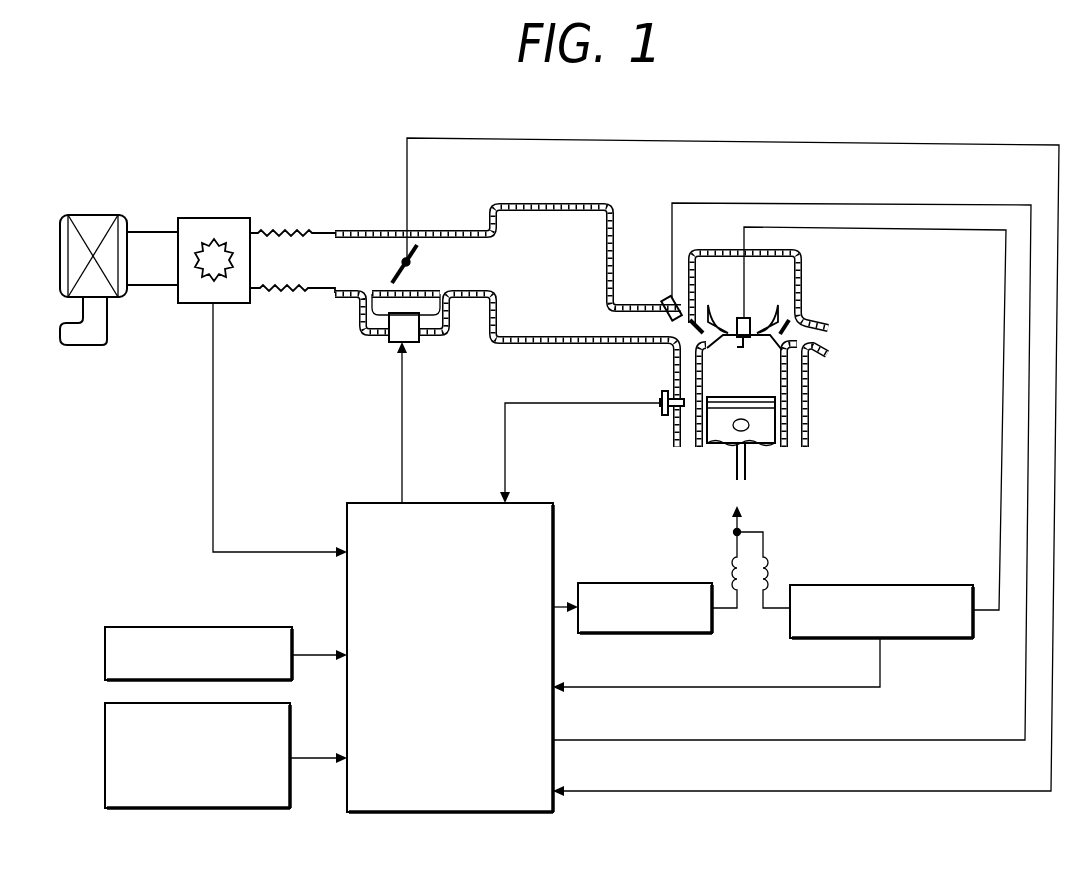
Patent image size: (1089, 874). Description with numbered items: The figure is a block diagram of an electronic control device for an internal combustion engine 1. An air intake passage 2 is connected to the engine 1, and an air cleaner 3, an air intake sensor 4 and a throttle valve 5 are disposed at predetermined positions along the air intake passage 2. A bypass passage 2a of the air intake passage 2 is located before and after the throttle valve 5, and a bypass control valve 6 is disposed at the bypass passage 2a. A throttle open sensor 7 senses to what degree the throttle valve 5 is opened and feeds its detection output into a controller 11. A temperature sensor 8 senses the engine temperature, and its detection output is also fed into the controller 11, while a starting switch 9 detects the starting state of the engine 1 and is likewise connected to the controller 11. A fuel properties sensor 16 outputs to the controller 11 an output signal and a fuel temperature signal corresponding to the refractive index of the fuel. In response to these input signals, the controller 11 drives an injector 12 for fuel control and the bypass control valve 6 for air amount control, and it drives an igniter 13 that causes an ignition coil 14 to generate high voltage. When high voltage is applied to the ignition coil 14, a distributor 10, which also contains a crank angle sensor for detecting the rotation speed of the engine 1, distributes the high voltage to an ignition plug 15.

The internal combustion engine 1 is at (672, 352).
The air intake passage 2 is at (286, 250).
The bypass passage 2a is at (360, 328).
The air cleaner 3 is at (101, 213).
The air intake sensor 4 is at (226, 218).
The throttle valve 5 is at (415, 258).
The bypass control valve 6 is at (420, 344).
The throttle open sensor 7 is at (407, 168).
The temperature sensor 8 is at (660, 413).
The starting switch 9 is at (296, 645).
The distributor 10 is at (915, 585).
The controller 11 is at (526, 503).
The injector 12 is at (666, 299).
The igniter 13 is at (660, 583).
The ignition coil 14 is at (771, 567).
The ignition plug 15 is at (748, 318).
The fuel properties sensor 16 is at (294, 725).